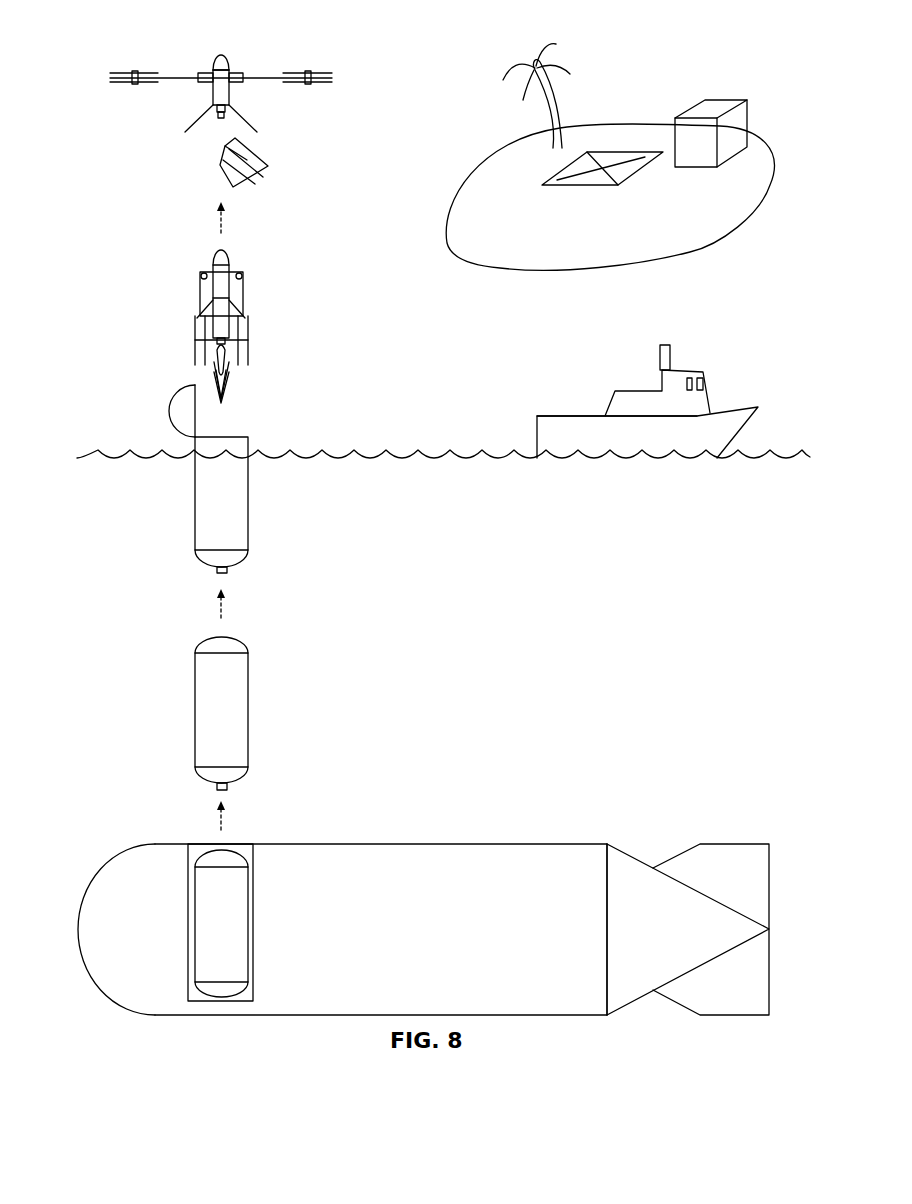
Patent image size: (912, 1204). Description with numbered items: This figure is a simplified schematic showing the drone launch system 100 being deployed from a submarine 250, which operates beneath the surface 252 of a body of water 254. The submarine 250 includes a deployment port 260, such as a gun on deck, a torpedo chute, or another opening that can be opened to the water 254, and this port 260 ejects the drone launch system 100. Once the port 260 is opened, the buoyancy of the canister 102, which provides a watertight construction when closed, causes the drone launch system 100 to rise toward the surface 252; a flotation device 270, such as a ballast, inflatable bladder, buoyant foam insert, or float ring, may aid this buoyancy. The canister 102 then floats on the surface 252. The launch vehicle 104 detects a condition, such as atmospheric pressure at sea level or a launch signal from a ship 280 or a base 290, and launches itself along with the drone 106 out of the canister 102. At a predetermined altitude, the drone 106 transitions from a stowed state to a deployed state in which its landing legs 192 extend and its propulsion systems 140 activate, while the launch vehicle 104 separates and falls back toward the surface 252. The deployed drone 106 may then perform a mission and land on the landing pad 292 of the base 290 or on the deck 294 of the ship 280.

The drone launch system 100 is at (238, 677).
The canister 102 is at (248, 493).
The launch vehicle 104 is at (273, 149).
The drone 106 is at (232, 46).
The propulsion systems 140 is at (135, 73).
The landing legs 192 is at (200, 117).
The submarine 250 is at (491, 840).
The surface 252 is at (397, 455).
The body of water 254 is at (495, 574).
The deployment port 260 is at (253, 922).
The flotation device 270 is at (240, 780).
The ship 280 is at (708, 395).
The base 290 is at (688, 127).
The landing pad 292 is at (607, 160).
The deck 294 is at (562, 416).